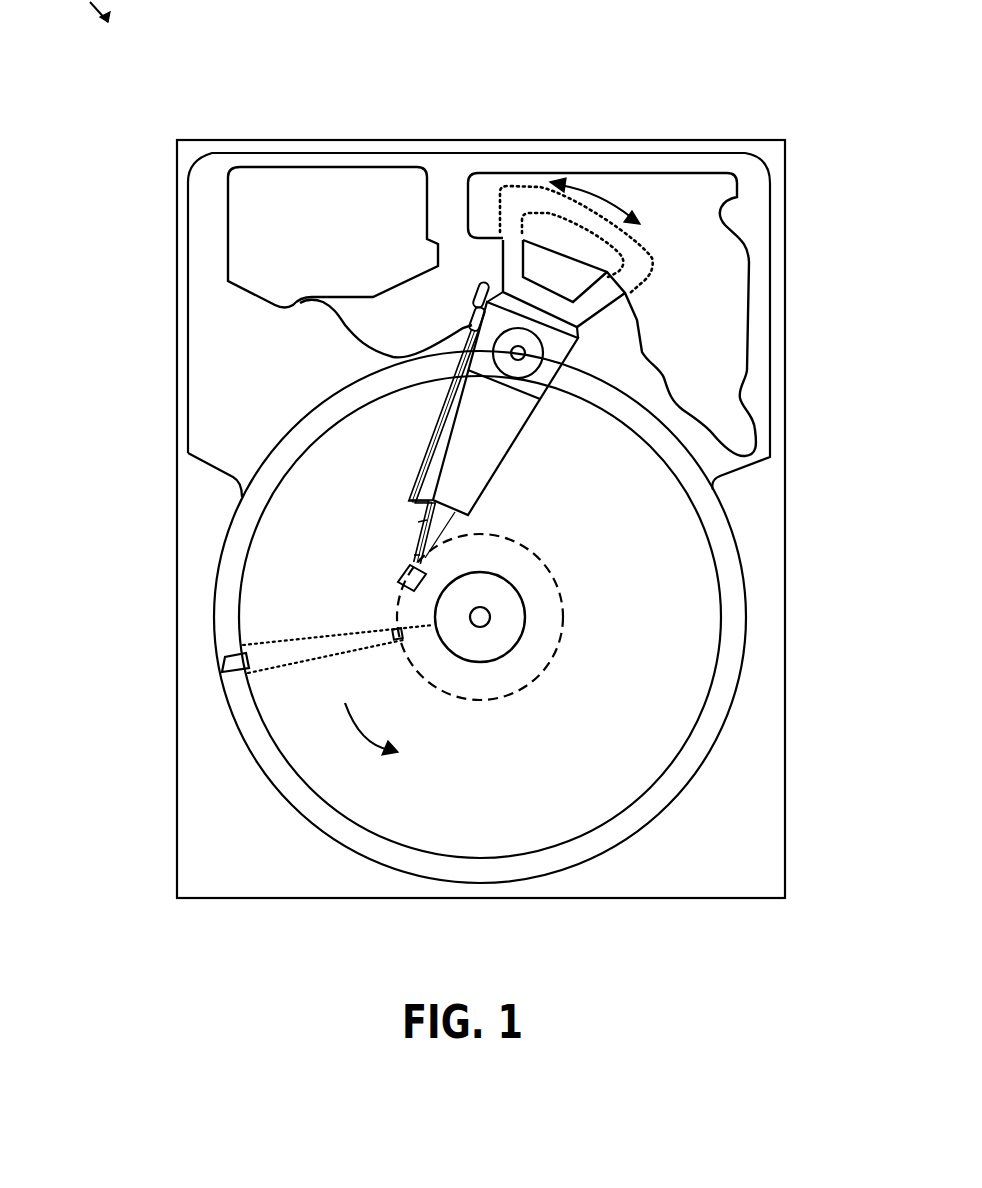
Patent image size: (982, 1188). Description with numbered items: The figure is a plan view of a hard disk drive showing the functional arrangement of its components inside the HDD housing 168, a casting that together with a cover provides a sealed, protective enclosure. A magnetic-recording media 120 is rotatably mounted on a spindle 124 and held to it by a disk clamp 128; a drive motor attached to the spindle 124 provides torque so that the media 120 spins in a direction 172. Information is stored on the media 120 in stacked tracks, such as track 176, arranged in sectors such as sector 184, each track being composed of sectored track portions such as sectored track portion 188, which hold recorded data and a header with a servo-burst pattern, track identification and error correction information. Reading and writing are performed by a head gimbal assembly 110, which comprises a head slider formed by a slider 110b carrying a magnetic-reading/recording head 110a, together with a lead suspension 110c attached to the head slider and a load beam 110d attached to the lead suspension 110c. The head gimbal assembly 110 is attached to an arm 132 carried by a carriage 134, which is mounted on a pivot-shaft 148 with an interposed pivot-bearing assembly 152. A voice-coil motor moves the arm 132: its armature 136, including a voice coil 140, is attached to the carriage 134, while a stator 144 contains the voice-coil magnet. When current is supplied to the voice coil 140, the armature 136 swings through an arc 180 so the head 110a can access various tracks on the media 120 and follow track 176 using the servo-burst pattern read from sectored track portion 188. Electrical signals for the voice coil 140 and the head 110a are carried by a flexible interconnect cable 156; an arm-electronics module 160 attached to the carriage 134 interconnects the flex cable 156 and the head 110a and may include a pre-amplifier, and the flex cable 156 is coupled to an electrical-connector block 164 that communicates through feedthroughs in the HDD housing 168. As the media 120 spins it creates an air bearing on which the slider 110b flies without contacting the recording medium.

The head gimbal assembly 110 is at (108, 433).
The magnetic-reading/recording head 110a is at (400, 588).
The slider 110b is at (410, 564).
The lead suspension 110c is at (420, 522).
The load beam 110d is at (412, 500).
The magnetic-recording media 120 is at (652, 573).
The spindle 124 is at (483, 618).
The disk clamp 128 is at (505, 633).
The arm 132 is at (472, 463).
The carriage 134 is at (537, 385).
The armature 136 is at (503, 292).
The voice coil 140 is at (498, 270).
The stator 144 is at (717, 262).
The pivot-shaft 148 is at (520, 353).
The pivot-bearing assembly 152 is at (530, 363).
The flexible interconnect cable 156 is at (347, 333).
The arm-electronics module 160 is at (472, 318).
The electrical-connector block 164 is at (250, 235).
The HDD housing 168 is at (770, 149).
The direction 172 is at (394, 722).
The track 176 is at (553, 582).
The arc 180 is at (515, 247).
The sector 184 is at (225, 662).
The sectored track portion 188 is at (393, 632).